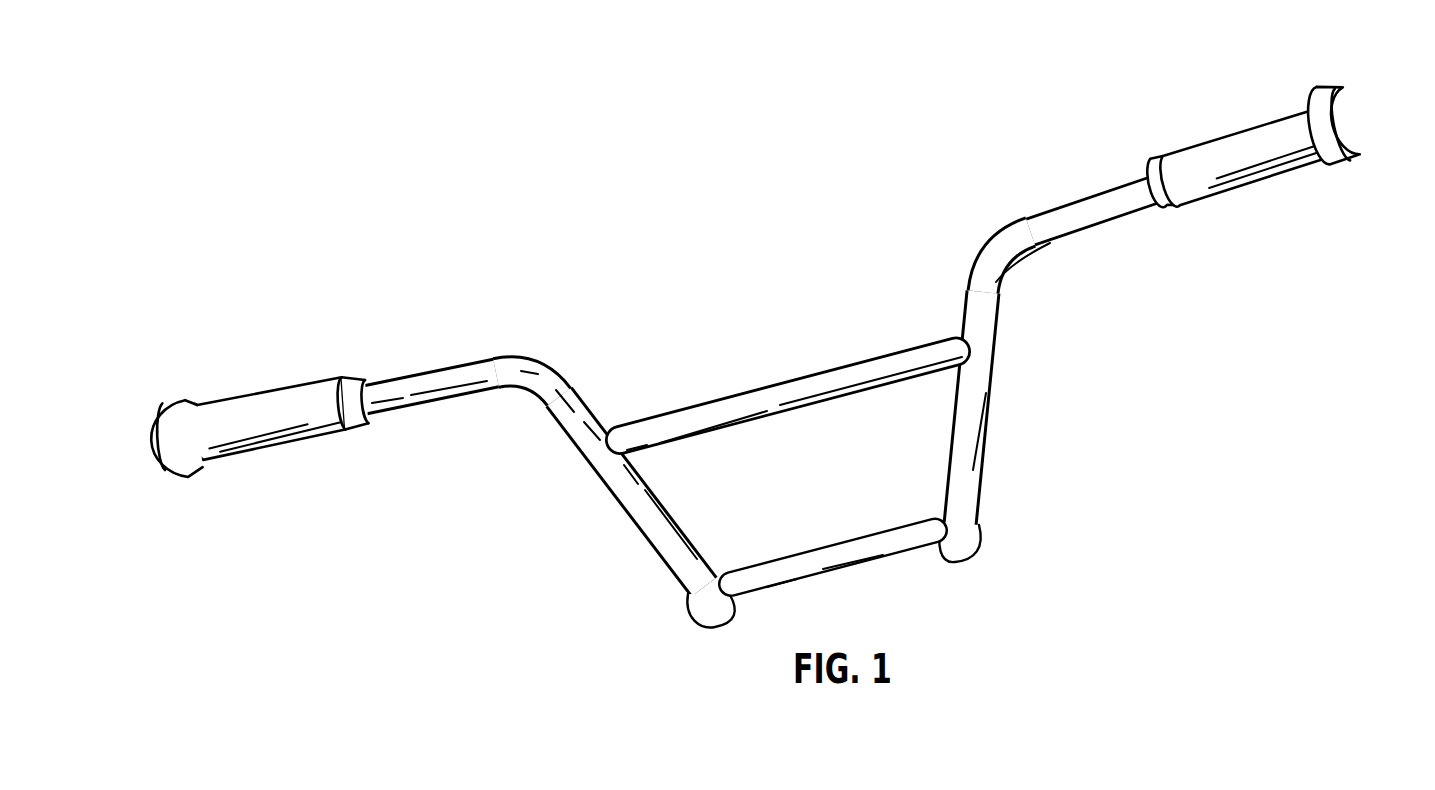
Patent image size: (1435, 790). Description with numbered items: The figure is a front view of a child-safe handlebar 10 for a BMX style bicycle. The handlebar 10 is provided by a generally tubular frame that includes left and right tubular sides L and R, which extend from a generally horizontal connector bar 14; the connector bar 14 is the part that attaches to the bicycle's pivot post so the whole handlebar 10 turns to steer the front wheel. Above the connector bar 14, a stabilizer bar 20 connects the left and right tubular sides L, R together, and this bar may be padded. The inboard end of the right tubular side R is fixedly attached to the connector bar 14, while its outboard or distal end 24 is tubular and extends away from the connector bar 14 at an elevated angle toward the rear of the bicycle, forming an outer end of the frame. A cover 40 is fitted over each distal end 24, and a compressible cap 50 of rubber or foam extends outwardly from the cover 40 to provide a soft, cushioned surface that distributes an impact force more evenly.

The handlebar 10 is at (772, 348).
The connector bar 14 is at (840, 550).
The stabilizer bar 20 is at (788, 388).
The outboard or distal end 24 is at (407, 390).
The cover 40 is at (263, 410).
The compressible cap 50 is at (152, 427).
The right tubular side R is at (547, 370).
The left tubular side L is at (997, 233).